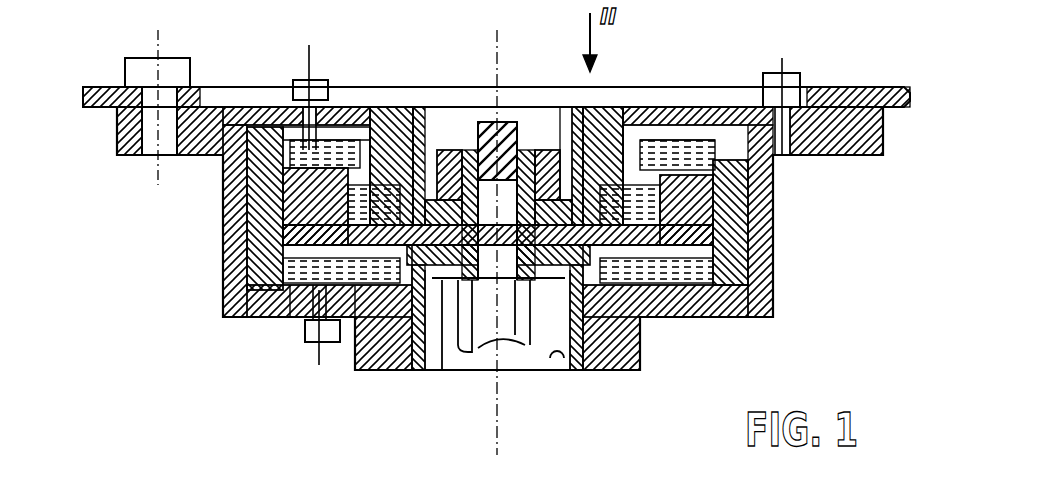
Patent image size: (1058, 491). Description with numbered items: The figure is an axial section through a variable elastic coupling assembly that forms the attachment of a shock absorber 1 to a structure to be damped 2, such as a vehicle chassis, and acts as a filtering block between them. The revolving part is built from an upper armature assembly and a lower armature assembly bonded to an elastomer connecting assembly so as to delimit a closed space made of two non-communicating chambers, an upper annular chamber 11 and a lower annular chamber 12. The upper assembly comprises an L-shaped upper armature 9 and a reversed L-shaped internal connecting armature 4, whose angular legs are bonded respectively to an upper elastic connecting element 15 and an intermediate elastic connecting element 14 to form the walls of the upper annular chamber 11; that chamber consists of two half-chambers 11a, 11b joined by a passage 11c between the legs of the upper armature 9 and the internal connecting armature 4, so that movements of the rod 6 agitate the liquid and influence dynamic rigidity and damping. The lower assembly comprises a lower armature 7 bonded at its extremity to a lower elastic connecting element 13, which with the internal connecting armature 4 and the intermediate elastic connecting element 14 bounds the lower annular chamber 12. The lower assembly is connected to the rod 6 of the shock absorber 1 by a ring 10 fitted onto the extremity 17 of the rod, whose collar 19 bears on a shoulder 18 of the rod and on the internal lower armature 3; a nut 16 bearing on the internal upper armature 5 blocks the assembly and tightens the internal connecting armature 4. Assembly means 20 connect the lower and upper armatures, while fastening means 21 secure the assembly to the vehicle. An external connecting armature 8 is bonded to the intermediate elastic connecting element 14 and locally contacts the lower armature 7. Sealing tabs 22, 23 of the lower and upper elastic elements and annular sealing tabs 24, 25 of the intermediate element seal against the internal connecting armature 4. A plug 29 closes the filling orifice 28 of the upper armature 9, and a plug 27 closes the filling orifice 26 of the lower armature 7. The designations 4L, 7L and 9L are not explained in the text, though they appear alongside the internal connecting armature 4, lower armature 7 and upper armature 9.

The shock absorber 1 is at (375, 422).
The structure to be damped 2 is at (855, 100).
The internal lower armature 3 is at (560, 360).
The internal connecting armature 4 is at (690, 318).
The rotor disc left end 4L is at (340, 232).
The internal upper armature 5 is at (575, 120).
The rod 6 is at (520, 345).
The lower armature 7 is at (655, 320).
The housing bottom 7L is at (630, 375).
The external connecting armature 8 is at (700, 248).
The upper armature 9 is at (690, 115).
The housing insert 9L is at (620, 120).
The ring 10 is at (527, 165).
The upper annular chamber 11 is at (872, 168).
The half-chamber 11a is at (710, 170).
The half-chamber 11b is at (680, 200).
The passage 11c is at (700, 228).
The lower annular chamber 12 is at (720, 318).
The lower elastic connecting element 13 is at (385, 350).
The intermediate elastic connecting element 14 is at (300, 195).
The upper elastic connecting element 15 is at (381, 112).
The nut 16 is at (447, 165).
The extremity 17 is at (490, 150).
The shoulder 18 is at (475, 340).
The collar 19 is at (442, 370).
The assembly means 20 is at (775, 85).
The fastening means 21 is at (145, 70).
The sealing tab 22 is at (355, 300).
The sealing tab 23 is at (270, 290).
The annular sealing tab 24 is at (300, 270).
The annular sealing tab 25 is at (298, 160).
The filling orifice 26 is at (298, 292).
The plug 27 is at (305, 335).
The filling orifice 28 is at (290, 130).
The plug 29 is at (300, 85).